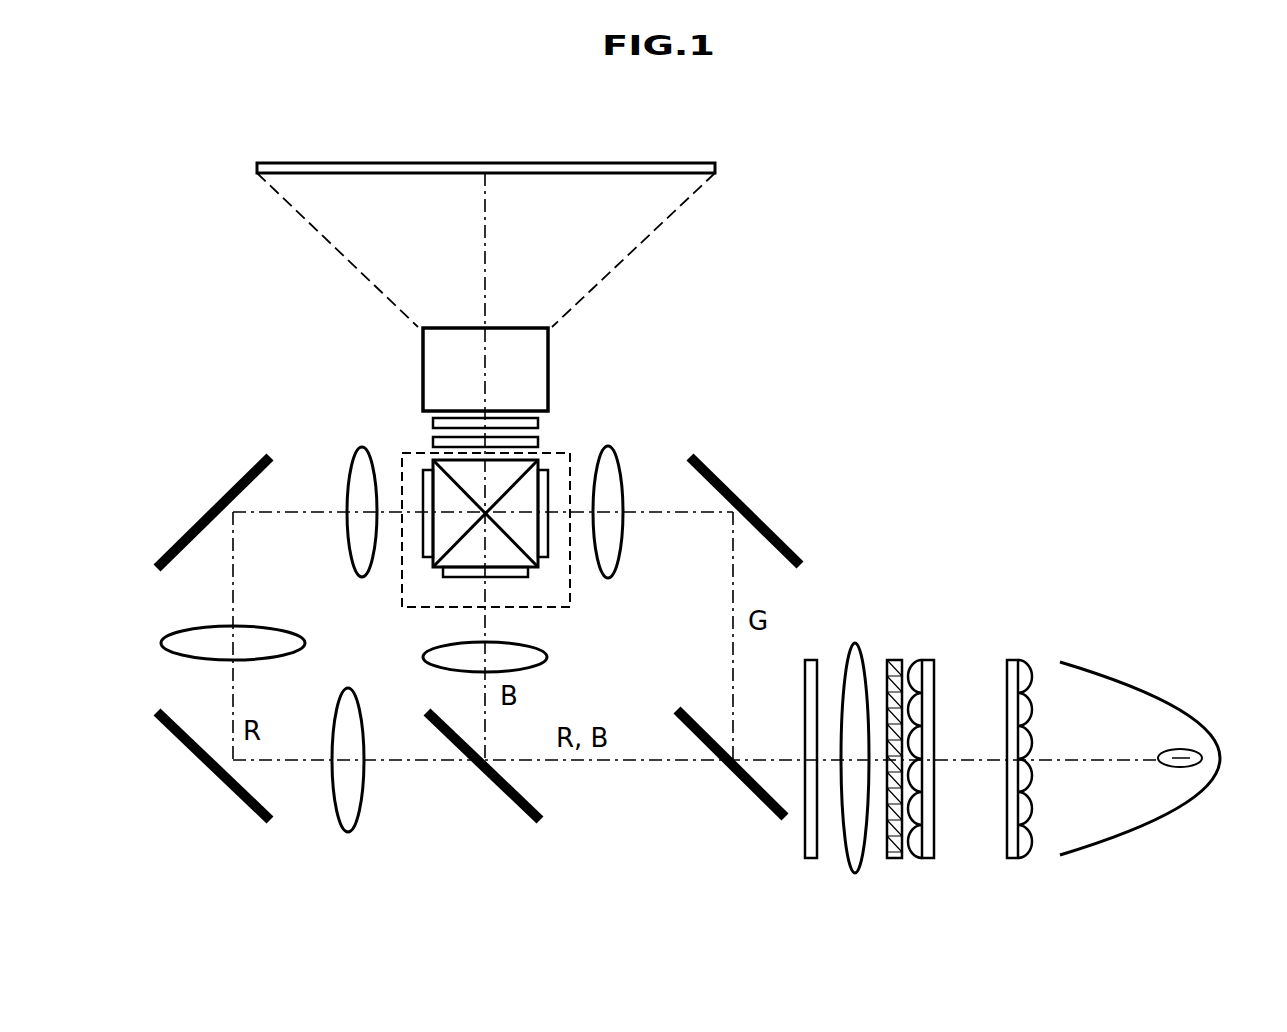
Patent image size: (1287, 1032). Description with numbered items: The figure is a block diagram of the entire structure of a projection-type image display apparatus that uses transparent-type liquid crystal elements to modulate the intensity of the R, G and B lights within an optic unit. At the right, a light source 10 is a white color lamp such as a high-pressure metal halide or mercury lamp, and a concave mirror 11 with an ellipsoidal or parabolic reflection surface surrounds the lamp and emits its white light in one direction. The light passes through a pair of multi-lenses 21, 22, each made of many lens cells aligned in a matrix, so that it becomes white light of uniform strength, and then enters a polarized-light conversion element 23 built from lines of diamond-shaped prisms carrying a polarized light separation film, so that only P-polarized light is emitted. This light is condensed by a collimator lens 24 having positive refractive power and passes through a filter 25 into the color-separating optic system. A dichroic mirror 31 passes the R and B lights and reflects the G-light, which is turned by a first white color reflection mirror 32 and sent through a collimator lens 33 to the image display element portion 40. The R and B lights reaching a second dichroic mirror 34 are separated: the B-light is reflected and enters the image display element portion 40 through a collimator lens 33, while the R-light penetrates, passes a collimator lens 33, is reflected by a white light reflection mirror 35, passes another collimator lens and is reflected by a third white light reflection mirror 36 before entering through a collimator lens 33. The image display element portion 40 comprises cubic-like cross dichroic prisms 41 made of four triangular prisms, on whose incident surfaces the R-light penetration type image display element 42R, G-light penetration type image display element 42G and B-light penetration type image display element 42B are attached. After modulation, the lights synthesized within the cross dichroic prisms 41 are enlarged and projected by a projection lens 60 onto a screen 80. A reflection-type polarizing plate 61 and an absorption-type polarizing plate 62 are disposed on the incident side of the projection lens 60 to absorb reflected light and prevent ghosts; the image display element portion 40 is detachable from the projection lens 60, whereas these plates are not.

The light source 10 is at (1190, 750).
The concave mirror 11 is at (1118, 663).
The multi-lens 21 is at (1010, 660).
The multi-lens 22 is at (930, 858).
The polarized-light conversion element 23 is at (889, 660).
The collimator lens 24 is at (860, 858).
The filter 25 is at (805, 853).
The dichroic mirror 31 is at (760, 800).
The first white color reflection mirror 32 is at (740, 497).
The collimator lens 33 is at (356, 490).
The dichroic mirror 34 is at (510, 806).
The white light reflection mirror 35 is at (222, 795).
The third white light reflection mirror 36 is at (222, 500).
The image display element portion 40 is at (563, 452).
The cross dichroic prisms 41 is at (497, 470).
The R-light penetration type image display element 42R is at (425, 490).
The G-light penetration type image display element 42G is at (458, 578).
The B-light penetration type image display element 42B is at (546, 492).
The projection lens 60 is at (530, 352).
The reflection-type polarizing plate 61 is at (432, 443).
The absorption-type polarizing plate 62 is at (432, 422).
The screen 80 is at (660, 165).